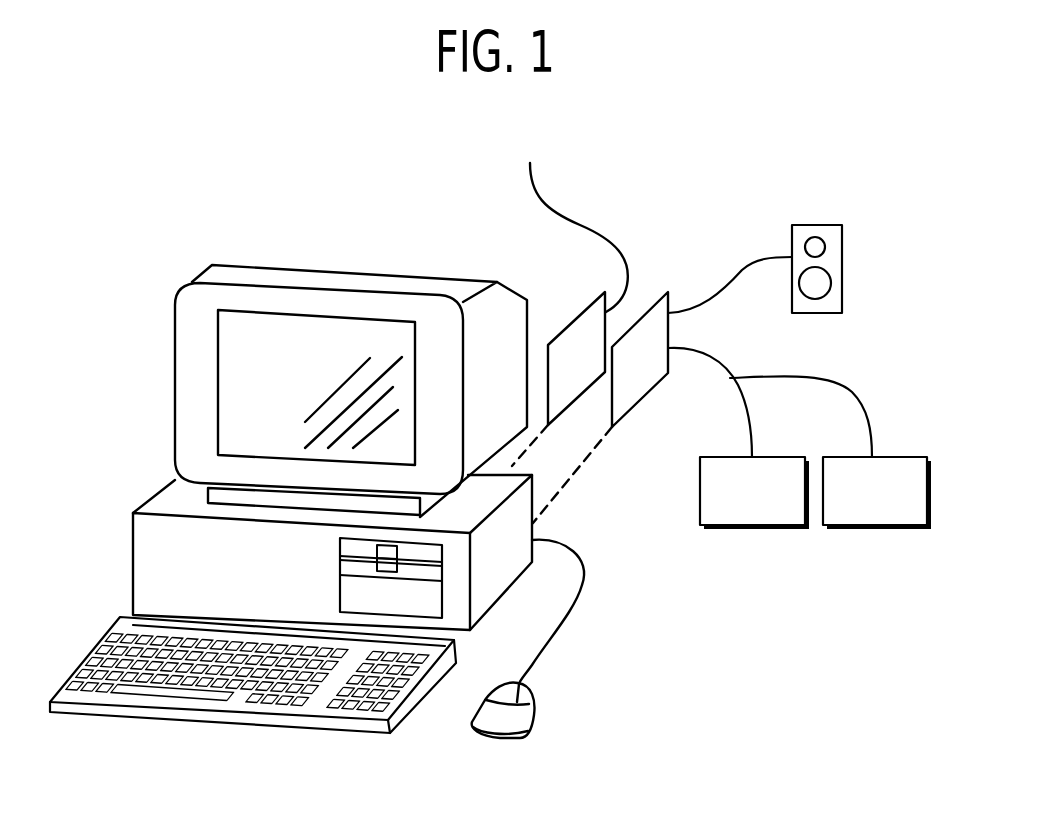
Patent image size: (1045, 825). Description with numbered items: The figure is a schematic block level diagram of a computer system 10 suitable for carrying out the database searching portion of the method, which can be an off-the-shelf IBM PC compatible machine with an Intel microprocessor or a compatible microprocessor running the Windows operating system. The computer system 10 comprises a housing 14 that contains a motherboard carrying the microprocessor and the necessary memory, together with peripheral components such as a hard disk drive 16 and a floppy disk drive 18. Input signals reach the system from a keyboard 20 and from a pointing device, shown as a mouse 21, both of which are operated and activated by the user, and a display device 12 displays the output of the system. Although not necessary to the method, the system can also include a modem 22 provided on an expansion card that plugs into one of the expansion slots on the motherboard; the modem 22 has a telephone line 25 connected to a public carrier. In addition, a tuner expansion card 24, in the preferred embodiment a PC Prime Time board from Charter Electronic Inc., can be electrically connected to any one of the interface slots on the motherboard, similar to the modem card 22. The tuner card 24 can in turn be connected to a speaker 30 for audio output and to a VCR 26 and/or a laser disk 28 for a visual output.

The computer system 10 is at (128, 431).
The display device 12 is at (299, 385).
The housing 14 is at (264, 605).
The hard disk drive 16 is at (372, 610).
The floppy disk drive 18 is at (345, 544).
The keyboard 20 is at (211, 736).
The mouse 21 is at (499, 742).
The modem 22 is at (584, 306).
The tuner expansion card 24 is at (644, 394).
The telephone line 25 is at (530, 184).
The VCR 26 is at (750, 530).
The laser disk 28 is at (872, 530).
The speaker 30 is at (844, 262).